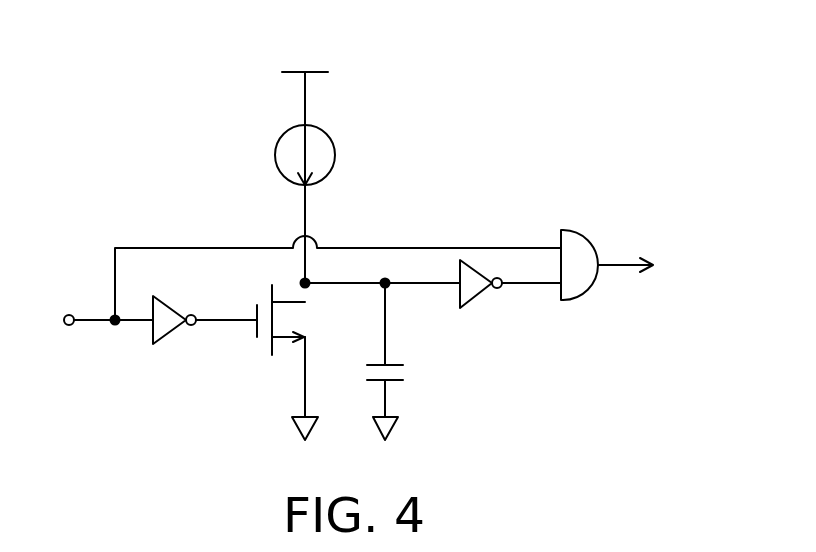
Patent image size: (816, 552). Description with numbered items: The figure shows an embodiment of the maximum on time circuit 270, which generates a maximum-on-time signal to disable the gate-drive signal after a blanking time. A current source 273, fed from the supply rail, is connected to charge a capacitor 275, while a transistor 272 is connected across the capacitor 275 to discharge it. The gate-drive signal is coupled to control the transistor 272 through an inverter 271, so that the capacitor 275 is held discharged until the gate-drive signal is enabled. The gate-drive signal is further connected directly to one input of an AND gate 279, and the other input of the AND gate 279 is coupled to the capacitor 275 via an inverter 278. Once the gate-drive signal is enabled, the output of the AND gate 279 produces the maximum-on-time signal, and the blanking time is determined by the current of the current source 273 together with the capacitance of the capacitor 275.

The maximum on time circuit 270 is at (722, 177).
The inverter 271 is at (167, 327).
The transistor 272 is at (288, 353).
The current source 273 is at (335, 155).
The capacitor 275 is at (409, 339).
The inverter 278 is at (469, 288).
The AND gate 279 is at (585, 282).